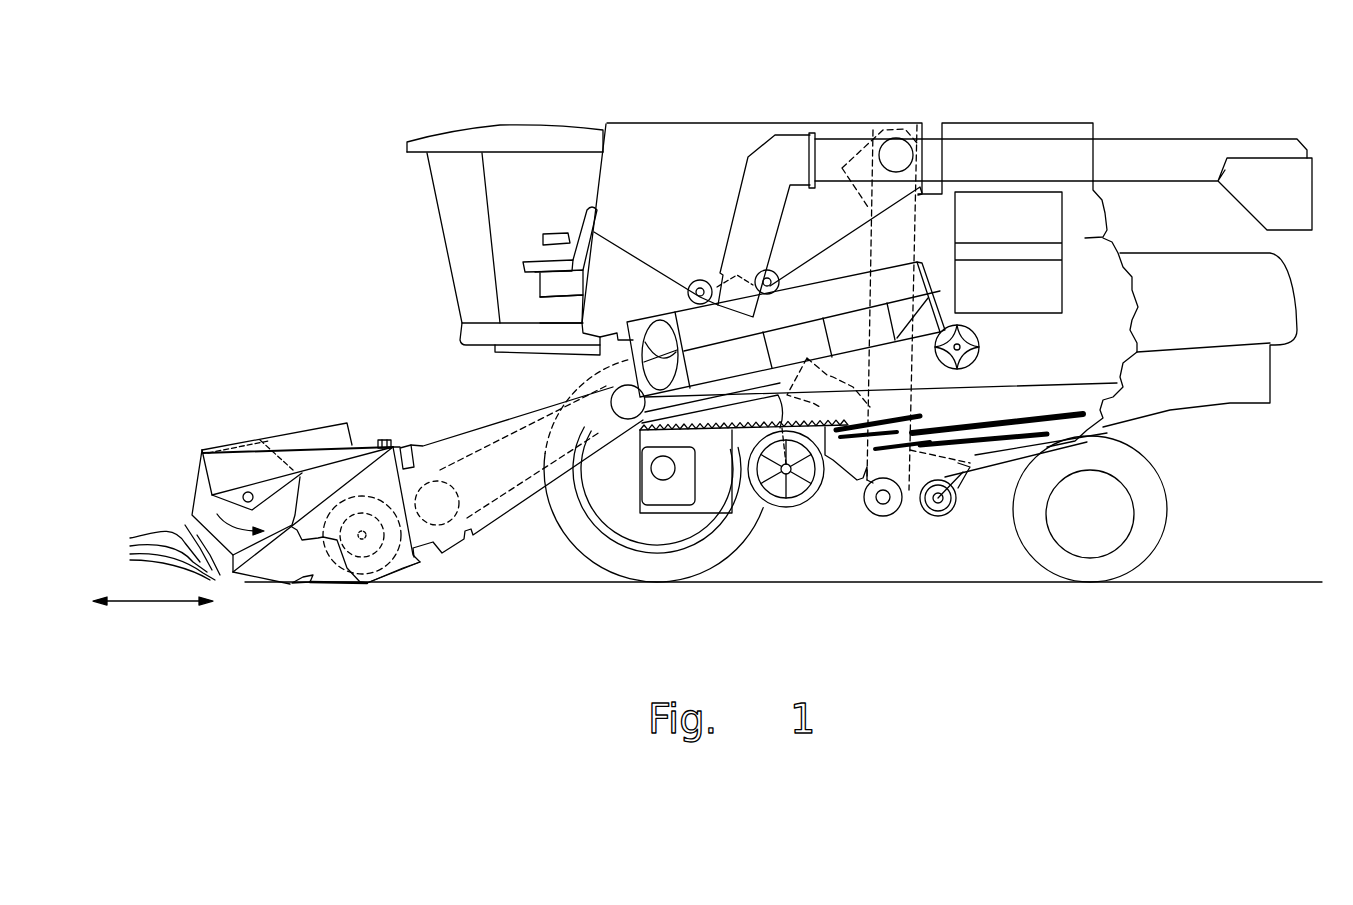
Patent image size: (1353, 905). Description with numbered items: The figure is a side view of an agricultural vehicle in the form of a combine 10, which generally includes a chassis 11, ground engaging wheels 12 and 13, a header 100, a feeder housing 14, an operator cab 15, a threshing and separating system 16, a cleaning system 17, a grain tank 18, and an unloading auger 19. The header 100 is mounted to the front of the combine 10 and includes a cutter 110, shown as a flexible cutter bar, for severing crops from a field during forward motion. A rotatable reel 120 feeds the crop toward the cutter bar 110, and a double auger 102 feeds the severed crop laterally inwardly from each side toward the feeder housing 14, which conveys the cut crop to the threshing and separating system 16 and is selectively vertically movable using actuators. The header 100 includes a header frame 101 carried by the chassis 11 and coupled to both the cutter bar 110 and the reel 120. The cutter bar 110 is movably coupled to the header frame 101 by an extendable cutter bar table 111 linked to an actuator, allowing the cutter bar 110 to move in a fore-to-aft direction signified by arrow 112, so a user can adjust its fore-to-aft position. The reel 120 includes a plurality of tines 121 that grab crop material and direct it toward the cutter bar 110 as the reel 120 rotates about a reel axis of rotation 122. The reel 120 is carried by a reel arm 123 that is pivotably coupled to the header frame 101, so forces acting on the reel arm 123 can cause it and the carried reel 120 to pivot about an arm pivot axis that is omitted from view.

The combine 10 is at (494, 96).
The chassis 11 is at (1090, 436).
The ground engaging wheel 12 is at (573, 543).
The ground engaging wheel 13 is at (1162, 528).
The feeder housing 14 is at (478, 430).
The operator cab 15 is at (438, 217).
The threshing and separating system 16 is at (561, 373).
The cleaning system 17 is at (847, 525).
The grain tank 18 is at (655, 127).
The unloading auger 19 is at (1177, 147).
The header 100 is at (278, 411).
The header frame 101 is at (405, 557).
The double auger 102 is at (364, 557).
The cutter bar 110 is at (290, 585).
The extendable cutter bar table 111 is at (302, 587).
The arrow 112 is at (152, 606).
The reel 120 is at (200, 487).
The tines 121 is at (158, 552).
The reel axis of rotation 122 is at (245, 492).
The reel arm 123 is at (364, 441).